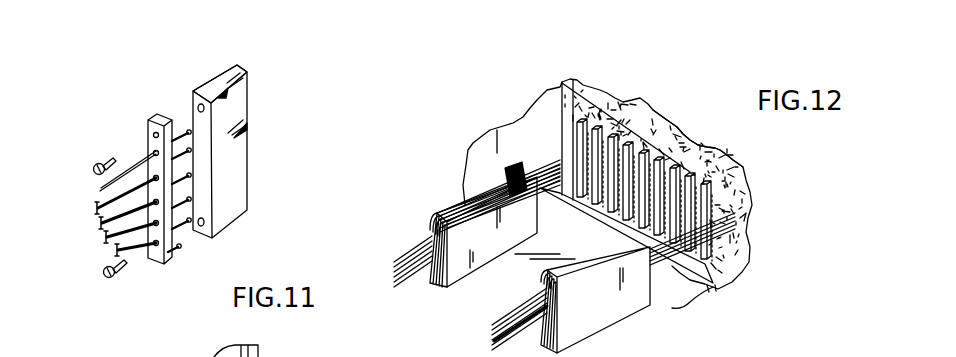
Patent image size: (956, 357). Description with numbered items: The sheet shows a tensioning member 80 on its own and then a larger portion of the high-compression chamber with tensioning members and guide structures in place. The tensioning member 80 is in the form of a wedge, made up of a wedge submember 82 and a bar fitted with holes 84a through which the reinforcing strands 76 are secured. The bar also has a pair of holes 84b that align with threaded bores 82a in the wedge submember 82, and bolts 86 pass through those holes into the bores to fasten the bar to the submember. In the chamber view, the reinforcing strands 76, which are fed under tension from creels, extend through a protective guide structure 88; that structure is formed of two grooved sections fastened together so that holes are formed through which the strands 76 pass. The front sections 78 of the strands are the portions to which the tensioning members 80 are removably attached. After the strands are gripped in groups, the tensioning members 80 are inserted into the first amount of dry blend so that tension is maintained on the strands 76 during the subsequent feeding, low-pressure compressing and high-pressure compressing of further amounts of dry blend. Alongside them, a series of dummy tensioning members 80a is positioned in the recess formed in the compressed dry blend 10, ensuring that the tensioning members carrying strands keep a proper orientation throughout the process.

In FIG. 12, the compressed dry blend 10 is at (640, 118).
In FIG. 11, the reinforcing strands 76 is at (110, 203).
In FIG. 12, the reinforcing strands 76 is at (411, 262).
In FIG. 12, the front sections 78 is at (557, 156).
In FIG. 11, the tensioning member 80 is at (209, 80).
In FIG. 12, the tensioning member 80 is at (575, 132).
In FIG. 12, the dummy tensioning members 80a is at (724, 124).
In FIG. 11, the wedge submember 82 is at (248, 104).
In FIG. 11, the threaded bores 82a is at (279, 234).
In FIG. 11, the holes 84a is at (239, 262).
In FIG. 11, the pair of holes 84b is at (192, 294).
In FIG. 11, the bolts 86 is at (94, 165).
In FIG. 12, the protective guide structure 88 is at (476, 272).